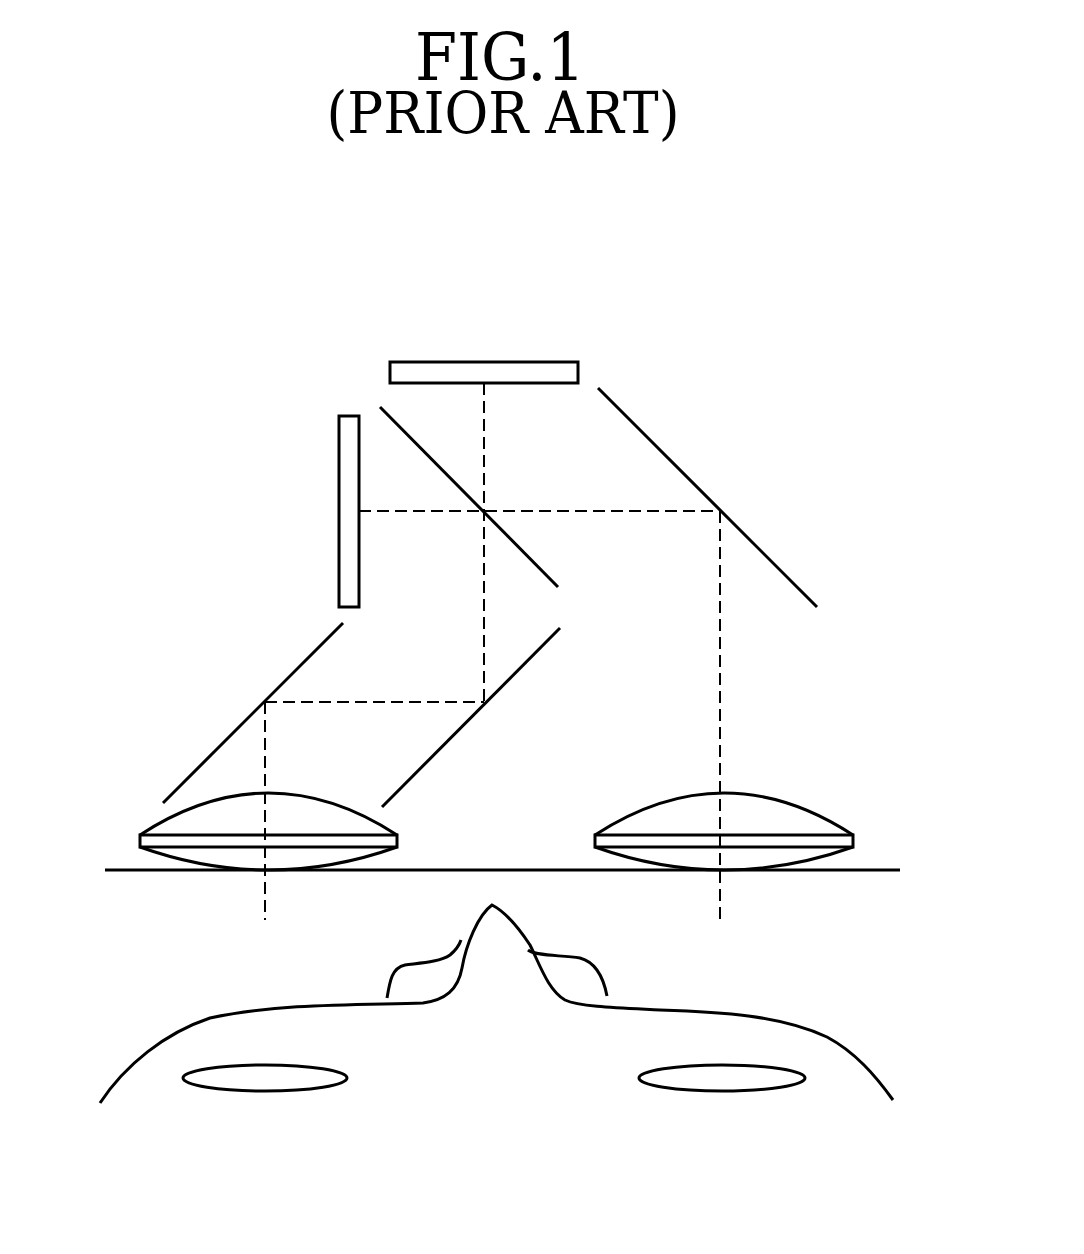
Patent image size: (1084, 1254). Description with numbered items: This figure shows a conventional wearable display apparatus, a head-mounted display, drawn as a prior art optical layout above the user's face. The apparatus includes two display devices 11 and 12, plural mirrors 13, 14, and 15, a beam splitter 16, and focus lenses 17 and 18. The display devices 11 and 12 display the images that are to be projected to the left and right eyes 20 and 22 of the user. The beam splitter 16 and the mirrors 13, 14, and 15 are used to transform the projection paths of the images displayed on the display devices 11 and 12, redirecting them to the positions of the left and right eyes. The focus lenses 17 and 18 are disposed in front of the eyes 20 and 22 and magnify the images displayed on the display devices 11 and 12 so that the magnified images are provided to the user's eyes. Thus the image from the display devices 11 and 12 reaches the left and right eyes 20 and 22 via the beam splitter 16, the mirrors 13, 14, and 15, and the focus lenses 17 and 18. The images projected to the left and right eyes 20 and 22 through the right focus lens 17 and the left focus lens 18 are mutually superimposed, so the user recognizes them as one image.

The display device 11 is at (390, 370).
The display device 12 is at (339, 445).
The mirror 13 is at (787, 573).
The mirror 14 is at (528, 663).
The mirror 15 is at (241, 722).
The beam splitter 16 is at (558, 587).
The right focus lens 17 is at (793, 817).
The left focus lens 18 is at (183, 822).
The left eye 20 is at (262, 1078).
The right eye 22 is at (713, 1078).